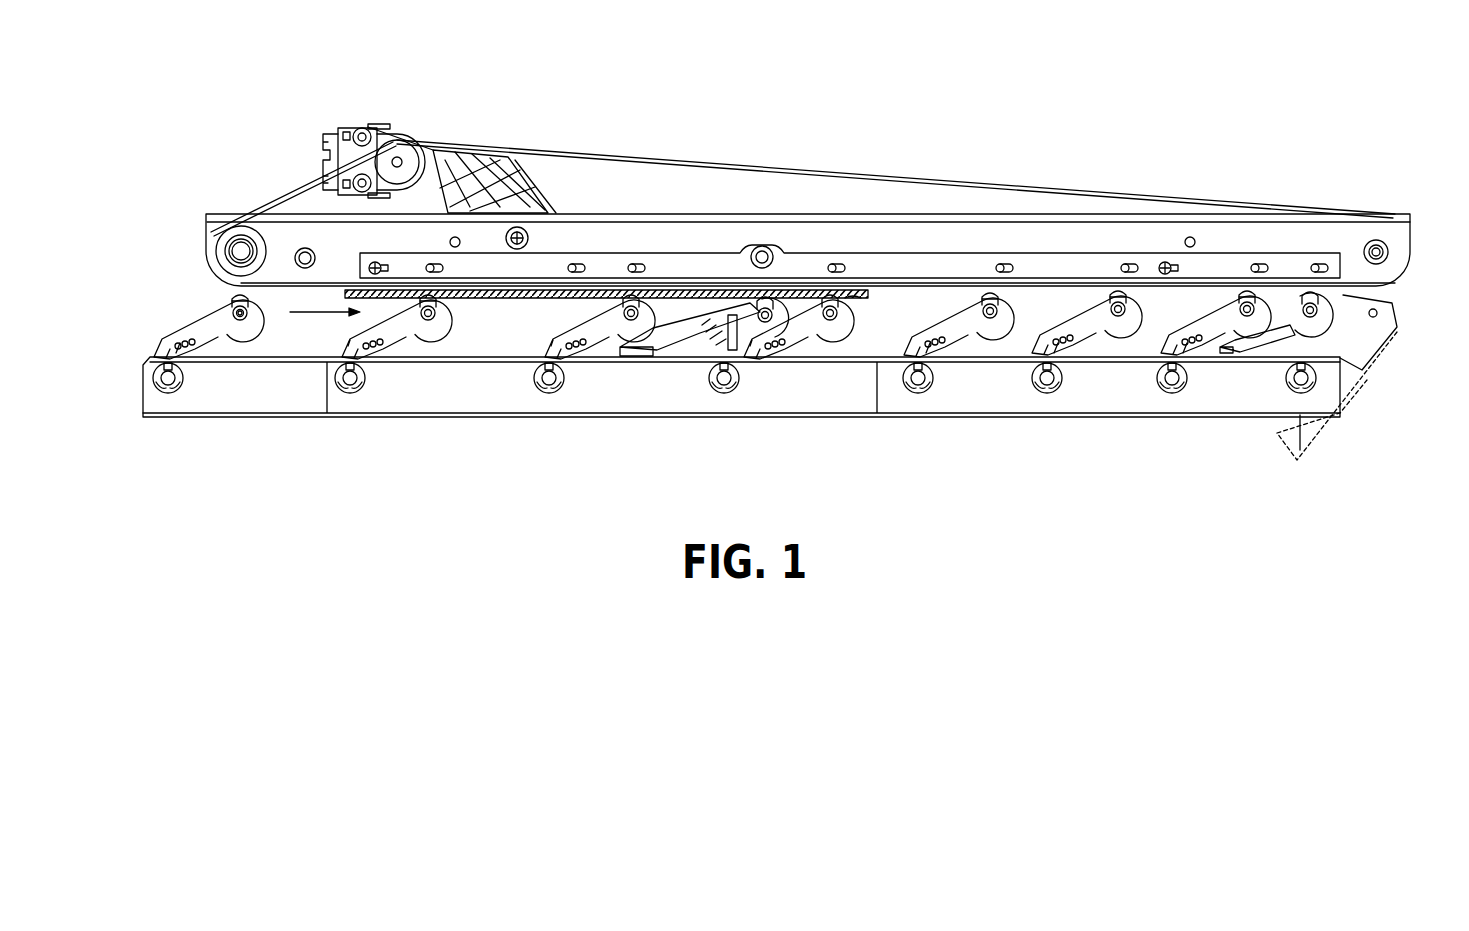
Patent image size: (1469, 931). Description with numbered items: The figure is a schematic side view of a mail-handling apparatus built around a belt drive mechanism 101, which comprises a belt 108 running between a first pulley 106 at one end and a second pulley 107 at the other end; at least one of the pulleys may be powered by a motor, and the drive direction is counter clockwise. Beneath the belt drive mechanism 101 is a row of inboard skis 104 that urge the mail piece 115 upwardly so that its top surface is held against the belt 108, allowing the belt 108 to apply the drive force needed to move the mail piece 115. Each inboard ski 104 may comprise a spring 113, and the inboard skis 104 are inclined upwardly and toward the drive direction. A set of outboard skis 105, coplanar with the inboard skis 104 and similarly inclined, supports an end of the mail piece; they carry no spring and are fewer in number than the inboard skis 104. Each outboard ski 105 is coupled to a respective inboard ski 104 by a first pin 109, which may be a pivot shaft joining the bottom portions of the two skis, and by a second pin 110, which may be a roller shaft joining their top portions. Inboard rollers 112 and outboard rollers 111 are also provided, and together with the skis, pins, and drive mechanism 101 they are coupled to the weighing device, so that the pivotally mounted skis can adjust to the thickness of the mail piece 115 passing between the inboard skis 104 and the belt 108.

The belt drive mechanism 101 is at (678, 99).
The inboard skis 104 is at (186, 310).
The outboard skis 105 is at (403, 354).
The first pulley 106 is at (214, 243).
The second pulley 107 is at (1403, 283).
The belt 108 is at (787, 168).
The first pins 109 is at (177, 388).
The second pins 110 is at (247, 306).
The outboard rollers 111 is at (847, 298).
The inboard rollers 112 is at (225, 297).
The spring 113 is at (208, 337).
The mail piece 115 is at (535, 293).